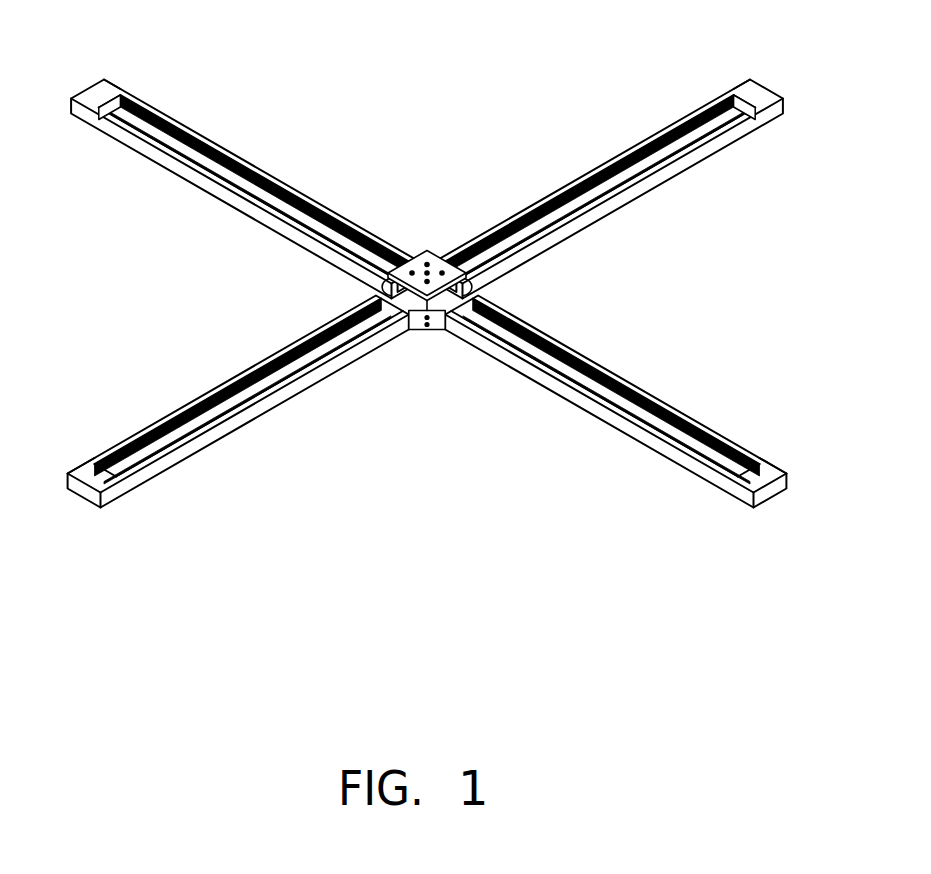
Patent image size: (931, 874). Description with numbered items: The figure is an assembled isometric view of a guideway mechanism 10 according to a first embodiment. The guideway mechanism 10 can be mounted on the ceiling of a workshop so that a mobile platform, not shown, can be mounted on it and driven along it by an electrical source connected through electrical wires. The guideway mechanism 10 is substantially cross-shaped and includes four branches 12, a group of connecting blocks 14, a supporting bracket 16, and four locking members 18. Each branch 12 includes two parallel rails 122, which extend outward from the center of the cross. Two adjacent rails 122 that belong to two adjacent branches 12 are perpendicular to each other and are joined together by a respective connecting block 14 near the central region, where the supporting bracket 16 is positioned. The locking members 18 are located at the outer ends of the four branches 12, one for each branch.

The guideway mechanism 10 is at (439, 261).
The branch 12 is at (427, 294).
The rail 122 is at (612, 190).
The connecting block 14 is at (470, 281).
The supporting bracket 16 is at (421, 257).
The locking member 18 is at (749, 80).